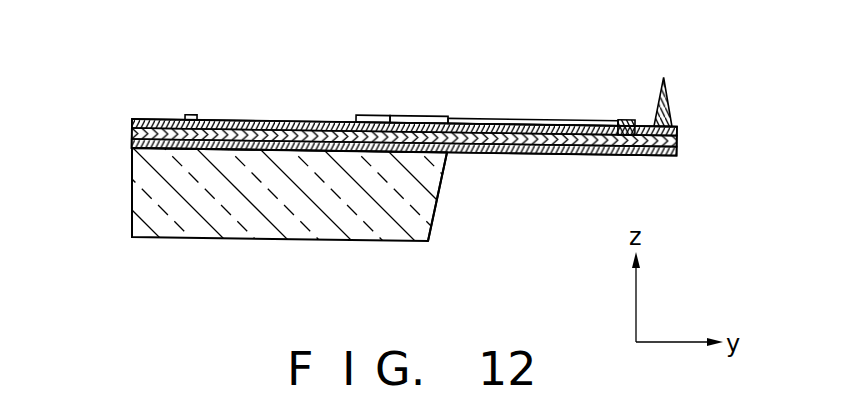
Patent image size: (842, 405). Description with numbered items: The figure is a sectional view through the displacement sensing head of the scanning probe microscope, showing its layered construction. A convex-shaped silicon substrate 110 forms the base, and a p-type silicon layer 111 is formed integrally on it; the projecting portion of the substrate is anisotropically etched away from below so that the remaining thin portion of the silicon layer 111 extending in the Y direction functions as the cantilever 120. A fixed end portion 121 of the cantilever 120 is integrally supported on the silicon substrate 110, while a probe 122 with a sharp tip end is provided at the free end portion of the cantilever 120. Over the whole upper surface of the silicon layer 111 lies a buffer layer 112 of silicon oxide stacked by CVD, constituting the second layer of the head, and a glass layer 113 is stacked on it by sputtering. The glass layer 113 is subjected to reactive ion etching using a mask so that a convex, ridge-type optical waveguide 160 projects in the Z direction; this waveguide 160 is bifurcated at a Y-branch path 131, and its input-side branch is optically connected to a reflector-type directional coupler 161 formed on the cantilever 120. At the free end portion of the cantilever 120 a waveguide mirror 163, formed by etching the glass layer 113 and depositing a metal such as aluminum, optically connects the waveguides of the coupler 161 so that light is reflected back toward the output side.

The silicon substrate 110 is at (134, 200).
The silicon layer 111 is at (132, 144).
The buffer layer 112 is at (132, 134).
The glass layer 113 is at (132, 122).
The cantilever 120 is at (540, 160).
The fixed end portion 121 is at (447, 156).
The probe 122 is at (672, 95).
The Y-branch path 131 is at (188, 113).
The ridge-type optical waveguide 160 is at (399, 112).
The reflector-type directional coupler 161 is at (538, 117).
The waveguide mirror 163 is at (624, 118).